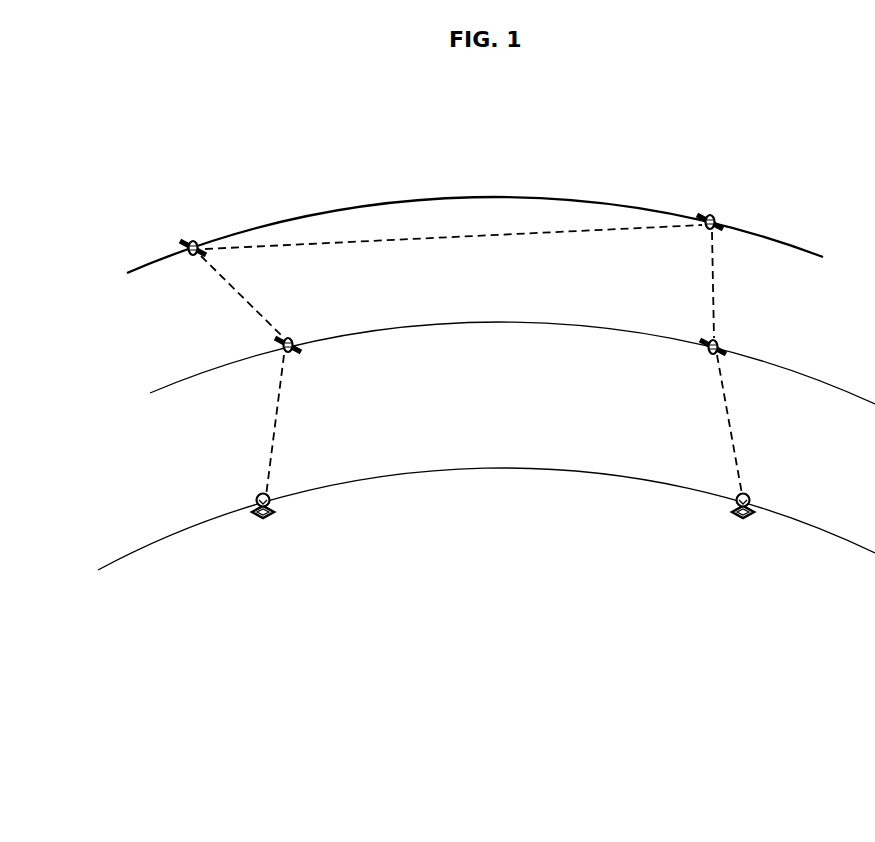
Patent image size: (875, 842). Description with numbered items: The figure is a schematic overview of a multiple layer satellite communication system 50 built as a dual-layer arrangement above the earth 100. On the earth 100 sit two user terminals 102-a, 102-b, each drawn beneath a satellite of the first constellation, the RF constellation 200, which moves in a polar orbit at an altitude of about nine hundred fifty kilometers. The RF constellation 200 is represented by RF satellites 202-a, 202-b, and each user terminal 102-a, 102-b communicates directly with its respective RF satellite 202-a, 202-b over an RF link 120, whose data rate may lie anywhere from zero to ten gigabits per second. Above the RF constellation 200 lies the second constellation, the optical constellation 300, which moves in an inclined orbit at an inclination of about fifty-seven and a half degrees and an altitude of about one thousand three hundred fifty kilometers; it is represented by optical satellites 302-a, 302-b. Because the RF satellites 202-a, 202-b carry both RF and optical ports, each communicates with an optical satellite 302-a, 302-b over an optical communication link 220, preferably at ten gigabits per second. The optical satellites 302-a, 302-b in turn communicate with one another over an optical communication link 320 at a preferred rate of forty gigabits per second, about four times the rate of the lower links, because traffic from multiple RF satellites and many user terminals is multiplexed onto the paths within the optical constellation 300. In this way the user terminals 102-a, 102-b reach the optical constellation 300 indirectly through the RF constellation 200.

The multiple layer satellite communication system 50 is at (184, 137).
The earth 100 is at (486, 519).
The user terminal 102-a is at (732, 518).
The user terminal 102-b is at (290, 509).
The RF link 120 is at (499, 425).
The constellation 1 (RF constellation) 200 is at (512, 363).
The RF satellite 202-a is at (689, 354).
The RF satellite 202-b is at (310, 357).
The optical communication link 220 is at (455, 285).
The constellation 2 (optical constellation) 300 is at (486, 226).
The optical satellite 302-a is at (695, 210).
The optical satellite 302-b is at (179, 236).
The optical communication link 320 is at (453, 236).